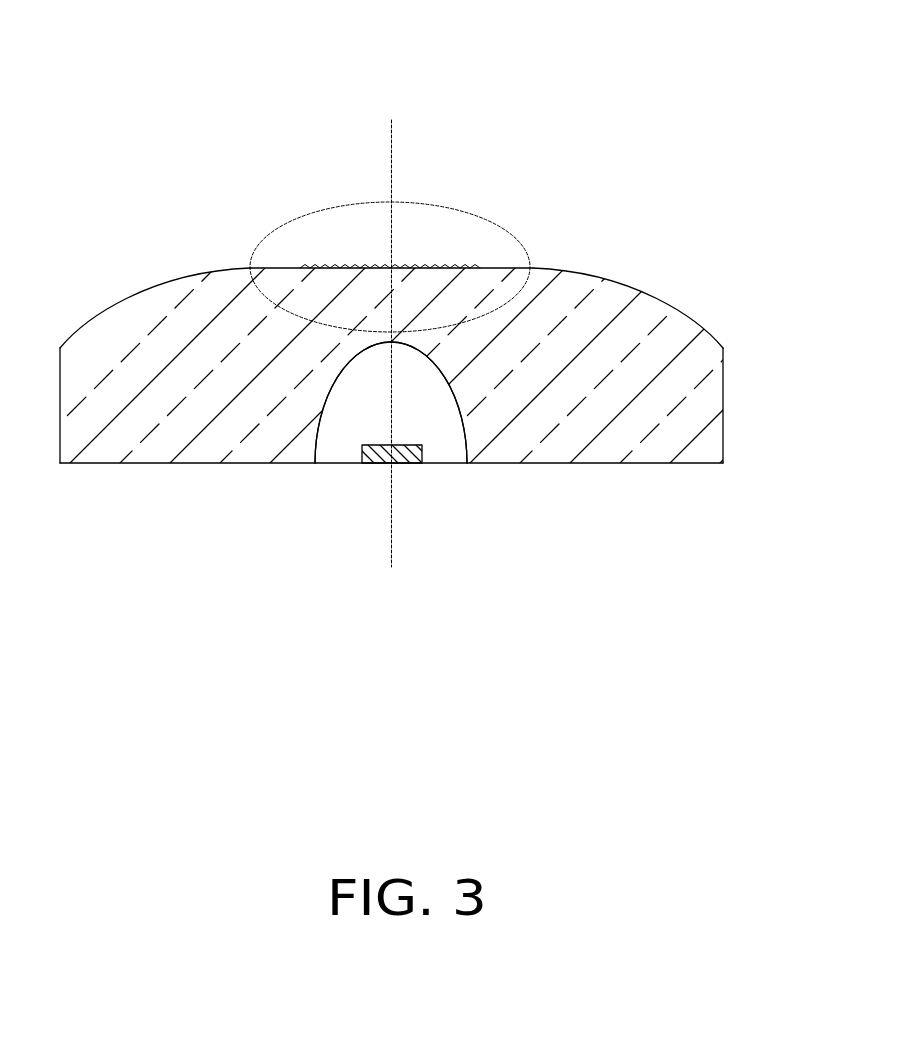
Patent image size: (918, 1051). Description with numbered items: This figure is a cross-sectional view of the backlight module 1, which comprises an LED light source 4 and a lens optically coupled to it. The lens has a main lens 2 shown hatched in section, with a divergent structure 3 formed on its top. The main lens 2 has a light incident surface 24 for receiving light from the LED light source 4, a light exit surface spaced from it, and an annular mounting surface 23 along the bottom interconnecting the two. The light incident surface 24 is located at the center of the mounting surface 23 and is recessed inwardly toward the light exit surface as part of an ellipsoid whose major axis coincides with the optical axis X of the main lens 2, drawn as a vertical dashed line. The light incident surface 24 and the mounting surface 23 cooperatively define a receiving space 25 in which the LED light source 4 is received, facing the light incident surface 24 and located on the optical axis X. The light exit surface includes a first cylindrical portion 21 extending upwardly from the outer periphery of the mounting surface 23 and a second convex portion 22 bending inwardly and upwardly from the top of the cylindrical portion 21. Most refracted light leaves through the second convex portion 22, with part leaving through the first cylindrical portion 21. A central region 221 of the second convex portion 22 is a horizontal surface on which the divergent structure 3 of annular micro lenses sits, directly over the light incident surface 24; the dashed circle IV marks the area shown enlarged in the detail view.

The backlight module 1 is at (353, 77).
The main lens 2 is at (113, 297).
The first cylindrical portion 21 is at (725, 385).
The second convex portion 22 is at (687, 313).
The central region 221 is at (538, 270).
The annular mounting surface 23 is at (593, 465).
The light incident surface 24 is at (322, 437).
The receiving space 25 is at (447, 453).
The divergent structure 3 is at (431, 262).
The LED light source 4 is at (398, 461).
The optical axis X is at (408, 341).
The region of detail view IV is at (280, 228).